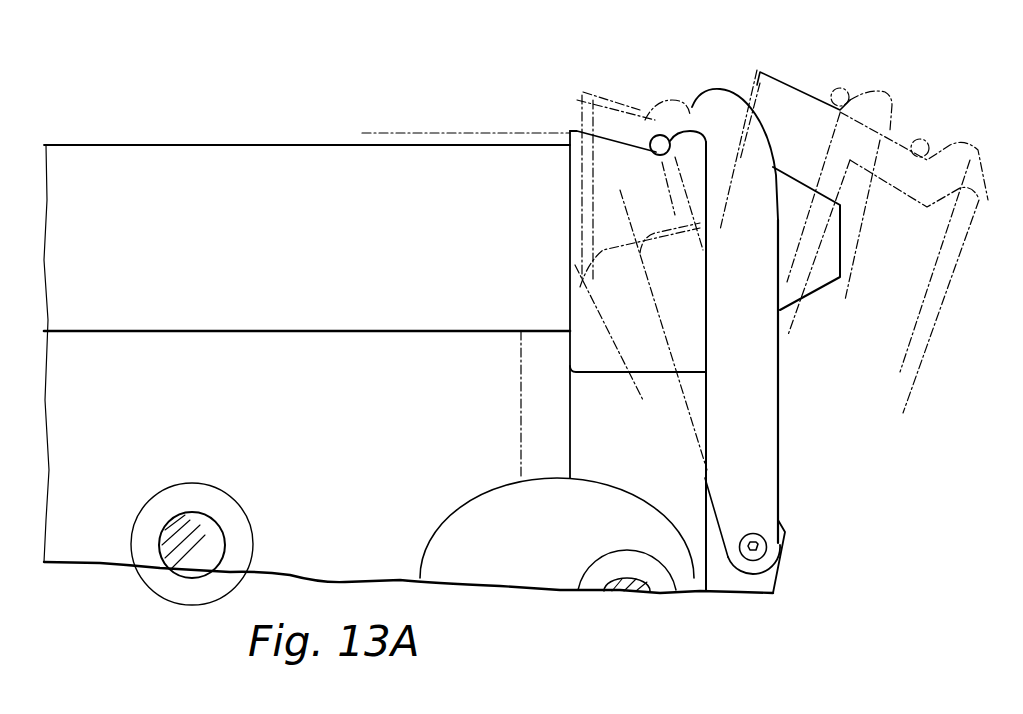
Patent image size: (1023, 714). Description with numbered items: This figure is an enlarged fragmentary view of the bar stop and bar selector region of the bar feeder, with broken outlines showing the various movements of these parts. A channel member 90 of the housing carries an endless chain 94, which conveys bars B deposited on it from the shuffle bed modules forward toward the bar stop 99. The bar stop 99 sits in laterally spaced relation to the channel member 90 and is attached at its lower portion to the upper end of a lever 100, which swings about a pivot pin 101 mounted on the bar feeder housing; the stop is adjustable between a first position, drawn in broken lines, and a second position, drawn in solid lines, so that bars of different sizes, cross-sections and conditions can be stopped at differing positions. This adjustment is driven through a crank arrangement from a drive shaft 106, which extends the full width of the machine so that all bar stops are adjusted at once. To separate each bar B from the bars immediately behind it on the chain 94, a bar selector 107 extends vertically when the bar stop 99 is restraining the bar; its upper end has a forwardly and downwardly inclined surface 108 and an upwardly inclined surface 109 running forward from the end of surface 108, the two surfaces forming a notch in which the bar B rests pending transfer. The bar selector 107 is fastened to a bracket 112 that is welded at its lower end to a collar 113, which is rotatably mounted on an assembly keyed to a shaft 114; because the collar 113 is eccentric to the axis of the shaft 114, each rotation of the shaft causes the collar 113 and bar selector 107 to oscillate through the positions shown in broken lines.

The channel member 90 is at (265, 180).
The endless chain 94 is at (473, 132).
The bar stop 99 is at (727, 112).
The lever 100 is at (770, 477).
The pivot pin 101 is at (766, 545).
The drive shaft 106 is at (184, 568).
The bar selector 107 is at (607, 187).
The forwardly and downwardly inclined surface 108 is at (610, 130).
The upwardly inclined surface 109 is at (688, 76).
The bracket 112 is at (587, 410).
The collar 113 is at (478, 498).
The shaft 114 is at (625, 596).
The bar B is at (576, 106).